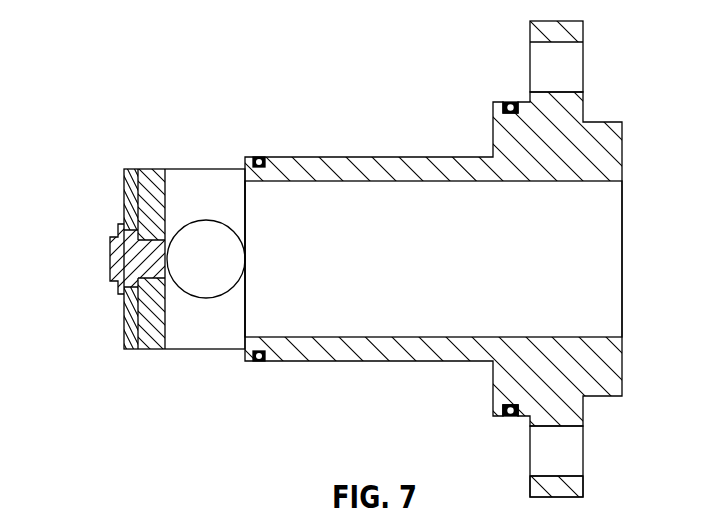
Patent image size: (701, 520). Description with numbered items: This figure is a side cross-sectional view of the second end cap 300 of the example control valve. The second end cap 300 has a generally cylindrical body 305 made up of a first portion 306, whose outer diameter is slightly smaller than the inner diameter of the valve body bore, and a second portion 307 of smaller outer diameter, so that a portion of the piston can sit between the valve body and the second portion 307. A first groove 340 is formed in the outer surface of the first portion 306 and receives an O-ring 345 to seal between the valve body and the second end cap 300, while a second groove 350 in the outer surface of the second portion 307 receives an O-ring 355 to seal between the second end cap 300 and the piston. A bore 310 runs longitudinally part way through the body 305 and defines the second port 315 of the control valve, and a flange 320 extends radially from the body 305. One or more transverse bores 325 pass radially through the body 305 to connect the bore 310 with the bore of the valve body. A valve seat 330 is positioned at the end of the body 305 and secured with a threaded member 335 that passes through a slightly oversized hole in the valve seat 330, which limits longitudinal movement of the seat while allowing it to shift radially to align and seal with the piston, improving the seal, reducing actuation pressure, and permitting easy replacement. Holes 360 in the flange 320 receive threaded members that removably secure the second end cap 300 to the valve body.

The second end cap 300 is at (130, 65).
The body 305 is at (433, 155).
The first portion 306 is at (502, 108).
The second portion 307 is at (367, 165).
The bore 310 is at (408, 182).
The second port 315 is at (390, 270).
The flange 320 is at (580, 485).
The transverse bore 325 is at (165, 190).
The valve seat 330 is at (130, 188).
The threaded member 335 is at (110, 248).
The first groove 340 is at (508, 421).
The O-ring 345 is at (503, 408).
The second groove 350 is at (259, 364).
The O-ring 355 is at (259, 158).
The hole 360 is at (567, 65).